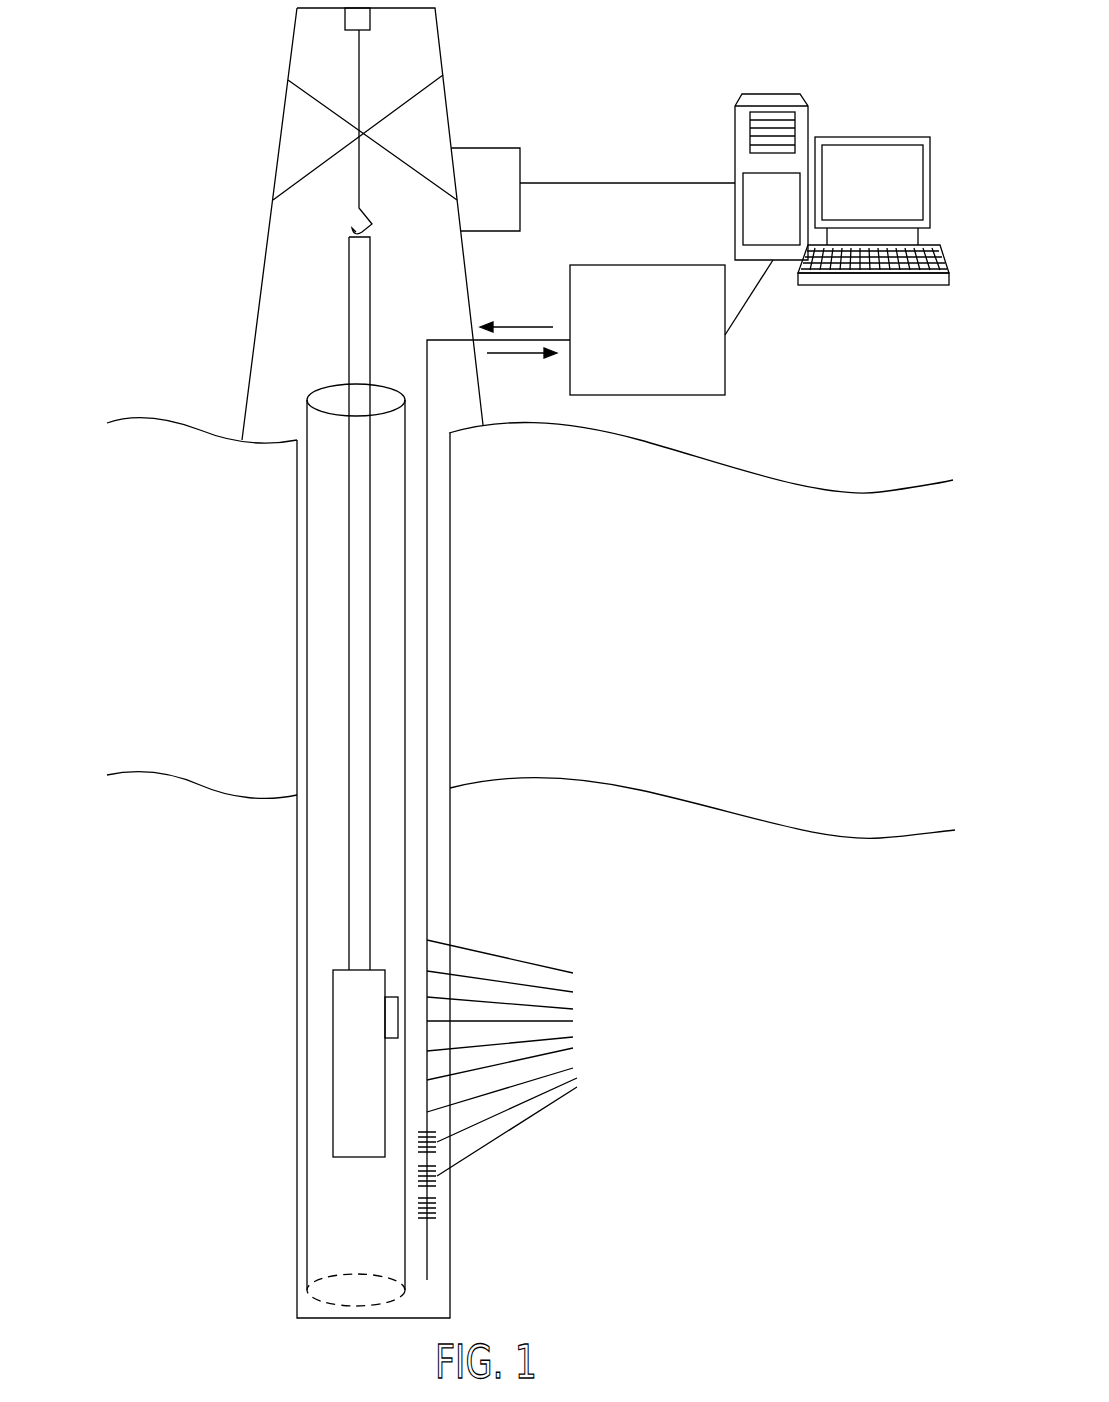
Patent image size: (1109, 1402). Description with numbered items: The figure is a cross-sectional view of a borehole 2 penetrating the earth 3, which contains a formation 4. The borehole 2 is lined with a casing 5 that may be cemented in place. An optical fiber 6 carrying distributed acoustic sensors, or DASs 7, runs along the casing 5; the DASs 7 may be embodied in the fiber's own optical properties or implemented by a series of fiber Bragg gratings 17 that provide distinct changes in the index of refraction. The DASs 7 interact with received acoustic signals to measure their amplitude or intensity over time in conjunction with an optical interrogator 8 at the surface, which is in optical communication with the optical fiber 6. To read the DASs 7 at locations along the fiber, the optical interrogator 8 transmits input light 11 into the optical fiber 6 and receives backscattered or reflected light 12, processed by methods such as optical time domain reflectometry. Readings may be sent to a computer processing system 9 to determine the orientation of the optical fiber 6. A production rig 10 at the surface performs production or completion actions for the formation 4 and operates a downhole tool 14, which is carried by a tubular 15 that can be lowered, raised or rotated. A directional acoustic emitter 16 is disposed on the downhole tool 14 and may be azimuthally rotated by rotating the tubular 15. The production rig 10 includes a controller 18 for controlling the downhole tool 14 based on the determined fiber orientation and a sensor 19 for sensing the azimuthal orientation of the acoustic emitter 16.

The borehole 2 is at (297, 600).
The earth 3 is at (530, 490).
The formation 4 is at (531, 837).
The casing 5 is at (307, 668).
The optical fiber 6 is at (427, 522).
The distributed acoustic sensors (DASs) 7 is at (585, 970).
The optical interrogator 8 is at (650, 265).
The computer processing system 9 is at (765, 94).
The production rig 10 is at (262, 105).
The input light 11 is at (520, 323).
The reflected light 12 is at (500, 357).
The downhole tool 14 is at (333, 1085).
The tubular 15 is at (349, 757).
The acoustic emitter 16 is at (390, 1017).
The fiber Bragg gratings 17 is at (452, 1211).
The controller 18 is at (505, 148).
The sensor 19 is at (520, 168).